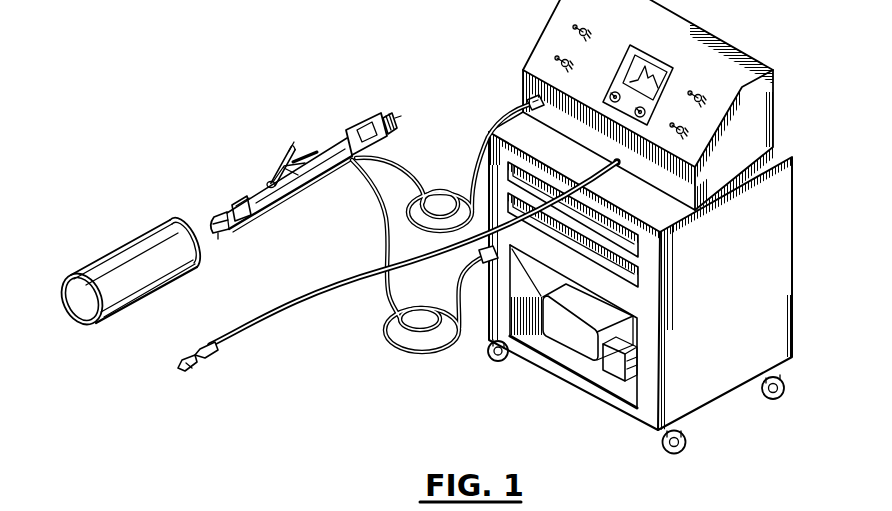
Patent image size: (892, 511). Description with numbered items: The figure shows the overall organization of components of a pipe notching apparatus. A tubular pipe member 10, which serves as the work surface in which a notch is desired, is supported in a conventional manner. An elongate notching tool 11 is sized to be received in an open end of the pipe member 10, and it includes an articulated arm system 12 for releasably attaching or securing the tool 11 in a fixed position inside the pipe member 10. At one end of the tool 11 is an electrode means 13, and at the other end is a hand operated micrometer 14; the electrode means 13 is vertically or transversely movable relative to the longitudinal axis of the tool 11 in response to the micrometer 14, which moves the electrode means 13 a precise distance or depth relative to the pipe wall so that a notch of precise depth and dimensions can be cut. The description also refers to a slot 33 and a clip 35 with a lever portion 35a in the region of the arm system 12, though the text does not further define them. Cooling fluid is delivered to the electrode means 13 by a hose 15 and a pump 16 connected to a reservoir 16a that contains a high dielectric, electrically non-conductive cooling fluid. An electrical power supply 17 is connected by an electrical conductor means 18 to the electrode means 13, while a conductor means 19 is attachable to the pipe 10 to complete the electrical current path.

The tubular pipe member 10 is at (107, 273).
The elongate notching tool 11 is at (238, 172).
The articulated arm system 12 is at (293, 146).
The electrode means 13 is at (214, 219).
The micrometer 14 is at (368, 121).
The hose 15 is at (418, 353).
The pump 16 is at (617, 363).
The reservoir 16a is at (572, 335).
The electrical power supply 17 is at (762, 47).
The electrical conductor means 18 is at (414, 175).
The conductor means 19 is at (198, 358).
The slot 33 is at (303, 151).
The clip wire 35 is at (281, 188).
The clip lever tip 35a is at (290, 146).